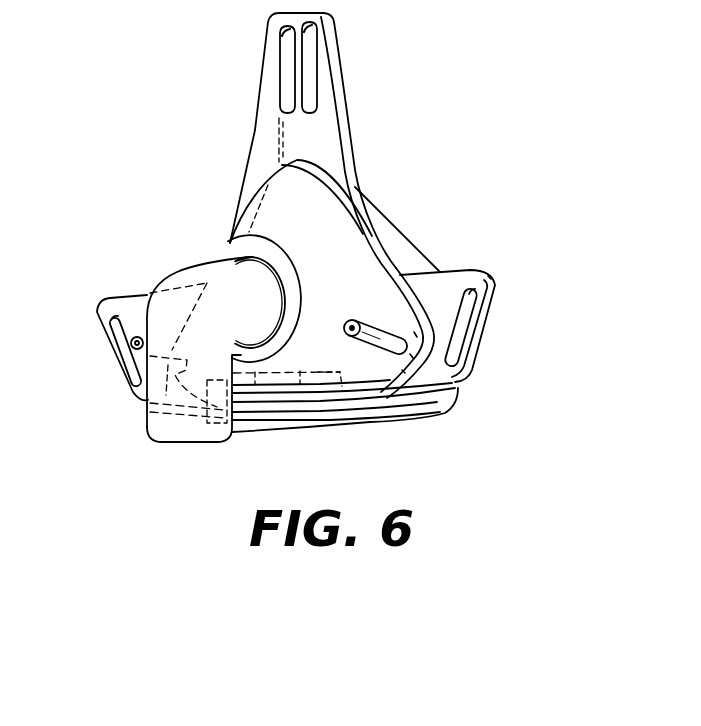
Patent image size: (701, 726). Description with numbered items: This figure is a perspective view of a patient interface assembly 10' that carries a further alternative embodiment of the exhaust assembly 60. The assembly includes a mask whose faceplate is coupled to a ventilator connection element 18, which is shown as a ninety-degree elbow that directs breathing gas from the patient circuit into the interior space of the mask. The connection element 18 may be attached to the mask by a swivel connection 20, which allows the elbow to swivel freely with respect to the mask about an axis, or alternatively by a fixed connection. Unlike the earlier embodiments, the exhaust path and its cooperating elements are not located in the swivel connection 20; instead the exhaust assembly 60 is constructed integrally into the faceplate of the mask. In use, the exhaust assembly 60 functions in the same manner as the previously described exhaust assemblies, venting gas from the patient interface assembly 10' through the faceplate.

The patient interface assembly 10' is at (287, 243).
The connecting element 18 is at (175, 278).
The swivel connection 20 is at (240, 252).
The exhaust assembly 60 is at (297, 380).